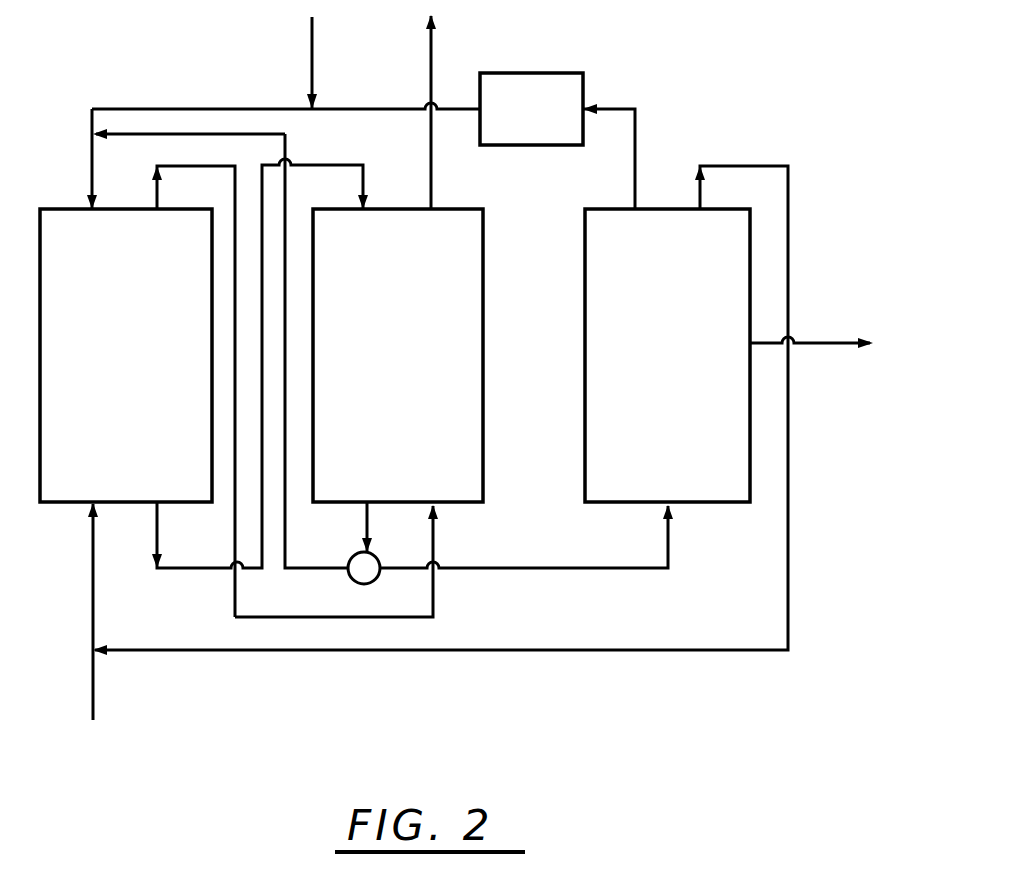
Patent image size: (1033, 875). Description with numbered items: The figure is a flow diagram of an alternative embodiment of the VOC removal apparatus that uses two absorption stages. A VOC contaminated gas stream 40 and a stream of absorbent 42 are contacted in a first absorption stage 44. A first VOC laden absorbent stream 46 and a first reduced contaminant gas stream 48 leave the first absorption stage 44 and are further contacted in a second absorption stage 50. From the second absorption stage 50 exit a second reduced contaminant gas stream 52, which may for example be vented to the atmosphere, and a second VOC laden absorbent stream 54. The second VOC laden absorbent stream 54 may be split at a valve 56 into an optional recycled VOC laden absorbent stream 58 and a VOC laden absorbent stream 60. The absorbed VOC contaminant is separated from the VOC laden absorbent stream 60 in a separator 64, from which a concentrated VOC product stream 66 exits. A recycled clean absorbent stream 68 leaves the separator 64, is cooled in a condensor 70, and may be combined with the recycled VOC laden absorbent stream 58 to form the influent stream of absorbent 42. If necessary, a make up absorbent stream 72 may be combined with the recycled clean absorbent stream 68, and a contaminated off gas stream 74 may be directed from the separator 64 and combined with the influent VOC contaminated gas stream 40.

The VOC contaminated gas stream 40 is at (93, 610).
The stream of absorbent 42 is at (92, 166).
The first absorption stage 44 is at (143, 358).
The first VOC laden absorbent stream 46 is at (172, 165).
The first reduced contaminant gas stream 48 is at (158, 527).
The second absorption stage 50 is at (410, 361).
The second reduced contaminant gas stream 52 is at (431, 173).
The second VOC laden absorbent stream 54 is at (370, 523).
The valve 56 is at (362, 582).
The recycled VOC laden absorbent stream 58 is at (287, 530).
The VOC laden absorbent stream 60 is at (485, 563).
The separator 64 is at (707, 361).
The concentrated VOC product stream 66 is at (815, 343).
The recycled clean absorbent stream 68 is at (635, 182).
The condensor 70 is at (548, 121).
The make up absorbent stream 72 is at (312, 40).
The contaminated off gas stream 74 is at (723, 163).